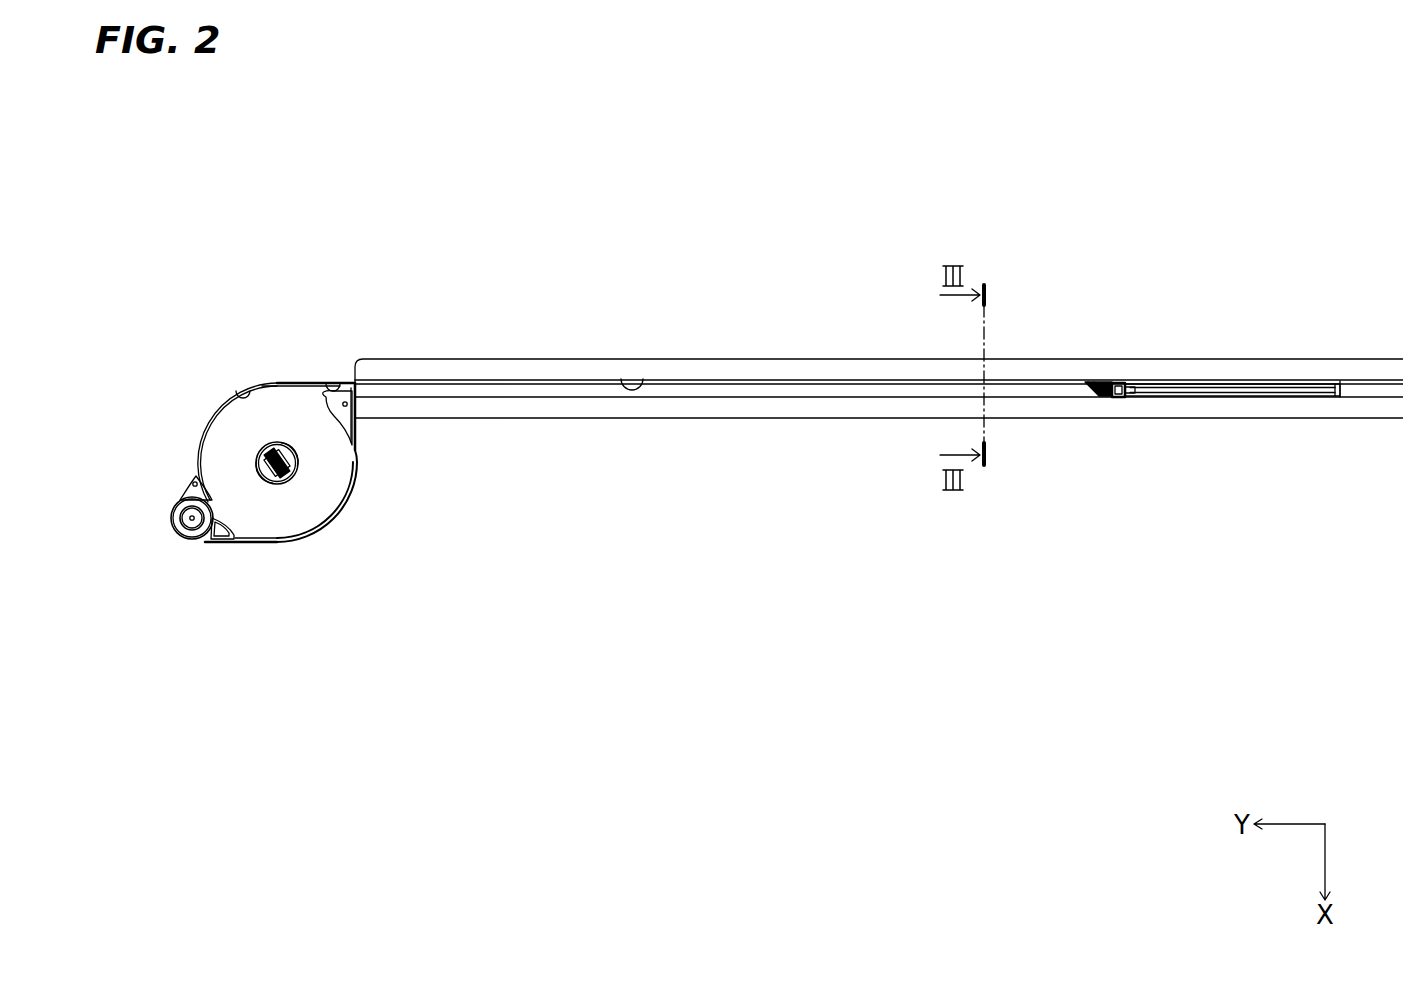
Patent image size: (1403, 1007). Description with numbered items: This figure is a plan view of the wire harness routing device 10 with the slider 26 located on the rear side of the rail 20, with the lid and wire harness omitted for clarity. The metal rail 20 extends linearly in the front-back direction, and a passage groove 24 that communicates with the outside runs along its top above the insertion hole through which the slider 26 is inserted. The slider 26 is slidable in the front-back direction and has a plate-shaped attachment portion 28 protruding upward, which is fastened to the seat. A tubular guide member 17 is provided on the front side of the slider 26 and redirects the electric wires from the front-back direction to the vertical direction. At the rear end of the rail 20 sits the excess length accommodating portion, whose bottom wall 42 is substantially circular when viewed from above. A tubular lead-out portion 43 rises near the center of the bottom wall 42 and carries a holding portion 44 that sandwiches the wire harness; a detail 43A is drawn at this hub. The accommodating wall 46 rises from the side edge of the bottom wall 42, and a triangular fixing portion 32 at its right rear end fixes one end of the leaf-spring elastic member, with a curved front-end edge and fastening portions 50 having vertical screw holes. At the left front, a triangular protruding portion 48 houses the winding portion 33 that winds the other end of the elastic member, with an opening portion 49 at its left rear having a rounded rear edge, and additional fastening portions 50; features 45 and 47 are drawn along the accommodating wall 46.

The wire harness routing device 10 is at (1062, 238).
The guide member 17 is at (1100, 382).
The rail 20 is at (760, 368).
The passage groove 24 is at (643, 378).
The slider 26 is at (1258, 259).
The attachment portion 28 is at (1230, 384).
The fixing portion 32 is at (352, 420).
The winding portion 33 is at (185, 530).
The bottom wall 42 is at (330, 482).
The lead-out portion 43 is at (293, 478).
The hub boss 43A is at (277, 483).
The holding portion 44 is at (277, 443).
The notch 45 is at (330, 383).
The accommodating wall 46 is at (293, 382).
The notch 47 is at (243, 392).
The protruding portion 48 is at (188, 497).
The opening portion 49 is at (235, 541).
The fastening portion 50 is at (347, 405).